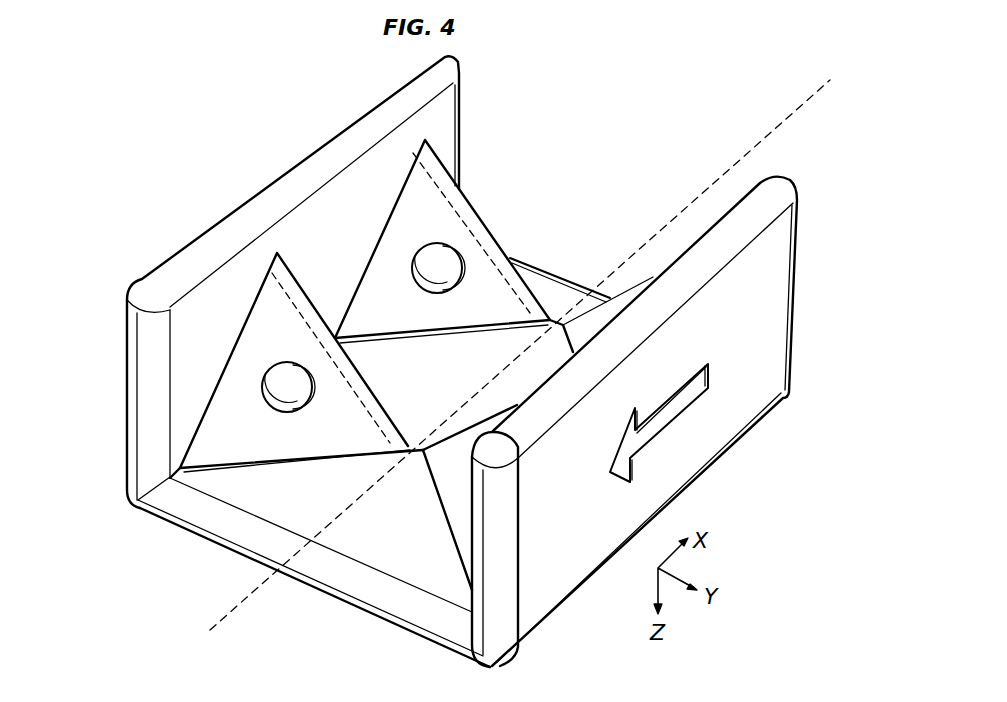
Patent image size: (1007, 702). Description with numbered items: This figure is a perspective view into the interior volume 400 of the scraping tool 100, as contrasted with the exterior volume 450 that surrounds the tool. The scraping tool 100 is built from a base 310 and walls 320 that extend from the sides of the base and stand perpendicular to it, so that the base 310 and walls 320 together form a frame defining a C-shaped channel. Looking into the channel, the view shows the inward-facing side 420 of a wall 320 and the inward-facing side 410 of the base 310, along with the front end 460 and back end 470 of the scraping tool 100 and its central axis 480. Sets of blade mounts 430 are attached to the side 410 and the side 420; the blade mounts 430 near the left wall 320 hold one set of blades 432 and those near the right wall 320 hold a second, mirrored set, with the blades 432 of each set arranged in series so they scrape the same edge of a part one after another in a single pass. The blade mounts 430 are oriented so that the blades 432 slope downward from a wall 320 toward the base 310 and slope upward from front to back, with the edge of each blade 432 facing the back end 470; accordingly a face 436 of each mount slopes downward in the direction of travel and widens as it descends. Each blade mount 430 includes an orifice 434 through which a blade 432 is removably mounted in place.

The scraping tool 100 is at (220, 121).
The base 310 is at (224, 547).
The wall 320 is at (127, 432).
The interior volume 400 is at (641, 150).
The inward-facing side of base 410 is at (370, 540).
The inward-facing side of wall 420 is at (338, 197).
The blade mount 430 is at (447, 312).
The blade 432 is at (490, 229).
The orifice 434 is at (414, 260).
The face 436 is at (494, 298).
The exterior volume 450 is at (823, 538).
The front end 460 is at (351, 613).
The back end 470 is at (520, 256).
The central axis 480 is at (787, 122).